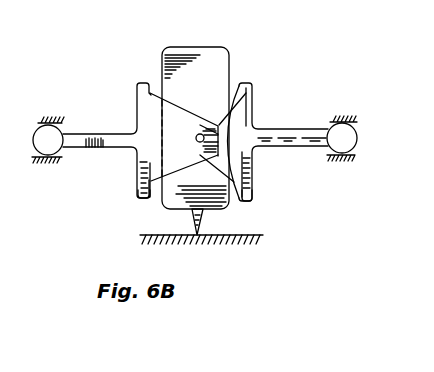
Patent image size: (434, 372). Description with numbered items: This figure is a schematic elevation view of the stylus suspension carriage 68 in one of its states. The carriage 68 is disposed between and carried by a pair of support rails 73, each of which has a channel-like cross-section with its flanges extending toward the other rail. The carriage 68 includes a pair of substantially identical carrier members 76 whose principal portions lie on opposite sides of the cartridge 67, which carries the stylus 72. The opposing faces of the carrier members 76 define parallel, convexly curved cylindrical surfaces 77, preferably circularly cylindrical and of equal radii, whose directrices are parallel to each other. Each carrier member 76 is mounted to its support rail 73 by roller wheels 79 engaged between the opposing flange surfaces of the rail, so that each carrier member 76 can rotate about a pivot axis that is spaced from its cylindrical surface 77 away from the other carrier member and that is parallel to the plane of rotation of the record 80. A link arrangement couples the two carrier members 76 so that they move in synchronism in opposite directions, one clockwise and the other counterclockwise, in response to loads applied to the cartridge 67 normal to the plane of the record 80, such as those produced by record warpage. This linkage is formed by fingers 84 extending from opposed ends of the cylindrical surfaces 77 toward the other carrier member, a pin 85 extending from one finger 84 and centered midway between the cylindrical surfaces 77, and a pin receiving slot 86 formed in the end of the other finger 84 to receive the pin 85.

The cartridge 67 is at (240, 63).
The stylus suspension carriage 68 is at (113, 92).
The stylus 72 is at (202, 226).
The support rails 73 is at (72, 124).
The carrier members 76 is at (137, 196).
The cylindrical surfaces 77 is at (158, 100).
The roller wheels 79 is at (50, 149).
The record 80 is at (142, 235).
The fingers 84 is at (165, 125).
The pin 85 is at (196, 140).
The pin receiving slot 86 is at (226, 142).